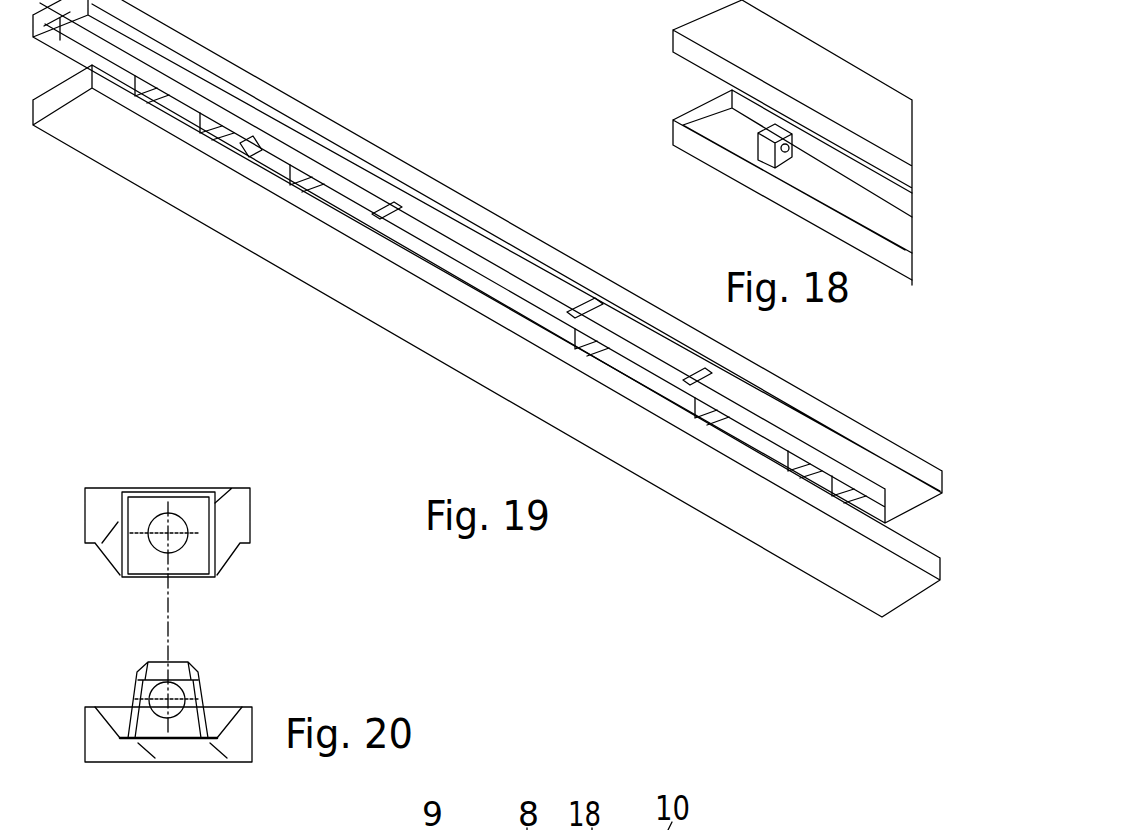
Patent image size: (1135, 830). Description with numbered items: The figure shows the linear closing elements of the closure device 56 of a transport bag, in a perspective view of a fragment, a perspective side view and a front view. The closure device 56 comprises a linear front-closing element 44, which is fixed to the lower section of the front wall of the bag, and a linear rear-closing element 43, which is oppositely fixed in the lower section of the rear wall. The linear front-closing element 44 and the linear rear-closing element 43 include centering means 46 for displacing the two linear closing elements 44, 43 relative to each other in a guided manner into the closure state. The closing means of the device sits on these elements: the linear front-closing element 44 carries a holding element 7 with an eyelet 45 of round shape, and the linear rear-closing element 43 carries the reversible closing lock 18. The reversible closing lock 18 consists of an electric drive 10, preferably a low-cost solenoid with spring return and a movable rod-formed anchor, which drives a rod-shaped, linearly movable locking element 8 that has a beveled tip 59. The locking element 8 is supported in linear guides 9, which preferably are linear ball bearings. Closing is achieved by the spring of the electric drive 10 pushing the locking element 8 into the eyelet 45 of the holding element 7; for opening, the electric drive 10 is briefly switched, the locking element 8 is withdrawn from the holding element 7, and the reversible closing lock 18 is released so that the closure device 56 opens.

In FIG. 18, the holding element 7 is at (757, 158).
In FIG. 20, the holding element 7 is at (168, 672).
In FIG. 19, the locking element 8 is at (198, 102).
In FIG. 19, the linear guides 9 is at (238, 140).
In FIG. 19, the electric drive 10 is at (343, 192).
In FIG. 19, the reversible closing lock 18 is at (270, 162).
In FIG. 19, the linear rear-closing element 43 is at (486, 216).
In FIG. 18, the linear rear-closing element 43 is at (673, 45).
In FIG. 20, the linear rear-closing element 43 is at (227, 515).
In FIG. 19, the linear front-closing element 44 is at (445, 330).
In FIG. 18, the linear front-closing element 44 is at (673, 137).
In FIG. 20, the linear front-closing element 44 is at (238, 737).
In FIG. 20, the eyelet 45 is at (162, 703).
In FIG. 20, the centering means 46 is at (229, 709).
In FIG. 19, the closure device 56 is at (314, 87).
In FIG. 20, the beveled tip 59 is at (285, 813).